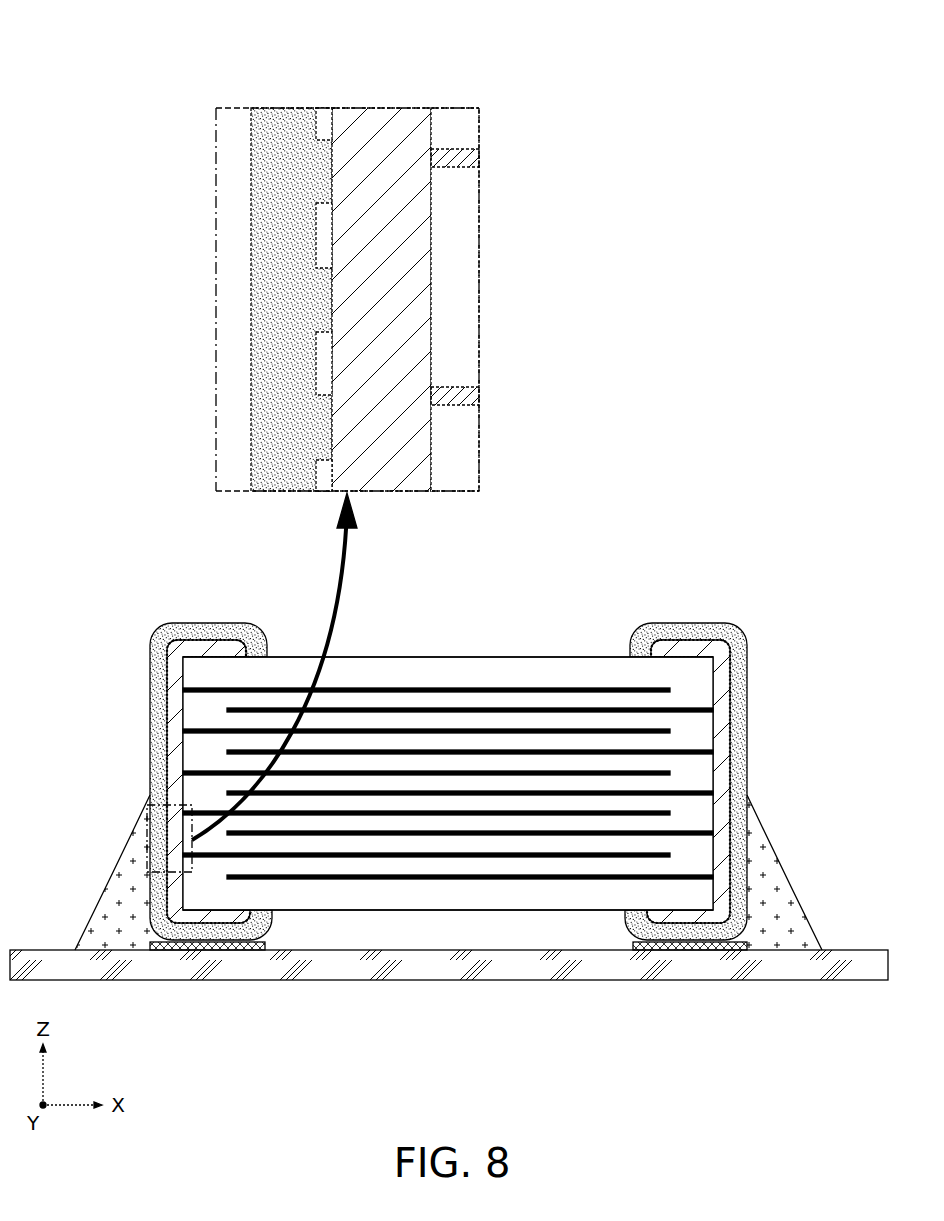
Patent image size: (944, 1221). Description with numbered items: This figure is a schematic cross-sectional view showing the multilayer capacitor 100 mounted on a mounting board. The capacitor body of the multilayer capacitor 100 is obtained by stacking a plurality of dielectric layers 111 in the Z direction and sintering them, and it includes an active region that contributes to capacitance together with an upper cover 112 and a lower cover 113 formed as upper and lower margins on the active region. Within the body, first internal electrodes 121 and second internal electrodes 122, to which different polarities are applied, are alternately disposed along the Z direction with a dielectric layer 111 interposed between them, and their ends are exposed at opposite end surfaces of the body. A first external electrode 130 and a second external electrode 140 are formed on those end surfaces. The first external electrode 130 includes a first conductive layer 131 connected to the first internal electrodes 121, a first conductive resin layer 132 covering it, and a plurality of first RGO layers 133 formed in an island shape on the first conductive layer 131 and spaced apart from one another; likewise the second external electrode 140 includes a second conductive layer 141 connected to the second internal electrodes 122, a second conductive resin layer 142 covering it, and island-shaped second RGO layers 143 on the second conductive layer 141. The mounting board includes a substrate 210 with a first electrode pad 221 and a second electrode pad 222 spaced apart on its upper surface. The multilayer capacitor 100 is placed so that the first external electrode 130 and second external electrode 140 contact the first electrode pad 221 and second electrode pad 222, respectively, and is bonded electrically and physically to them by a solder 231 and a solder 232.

The multilayer capacitor 100 is at (592, 652).
The dielectric layer 111 is at (700, 852).
The upper cover 112 is at (550, 668).
The lower cover 113 is at (483, 912).
The first internal electrode 121 is at (414, 688).
The second internal electrode 122 is at (483, 688).
The first external electrode 130 is at (218, 500).
The first conductive layer 131 is at (175, 780).
The first conductive resin layer 132 is at (160, 718).
The first RGO layer 133 is at (163, 760).
The second external electrode 140 is at (754, 781).
The second conductive layer 141 is at (722, 780).
The second conductive resin layer 142 is at (735, 718).
The second RGO layer 143 is at (735, 760).
The substrate 210 is at (392, 966).
The first electrode pad 221 is at (208, 952).
The second electrode pad 222 is at (682, 952).
The solder 231 is at (120, 940).
The solder 232 is at (772, 932).